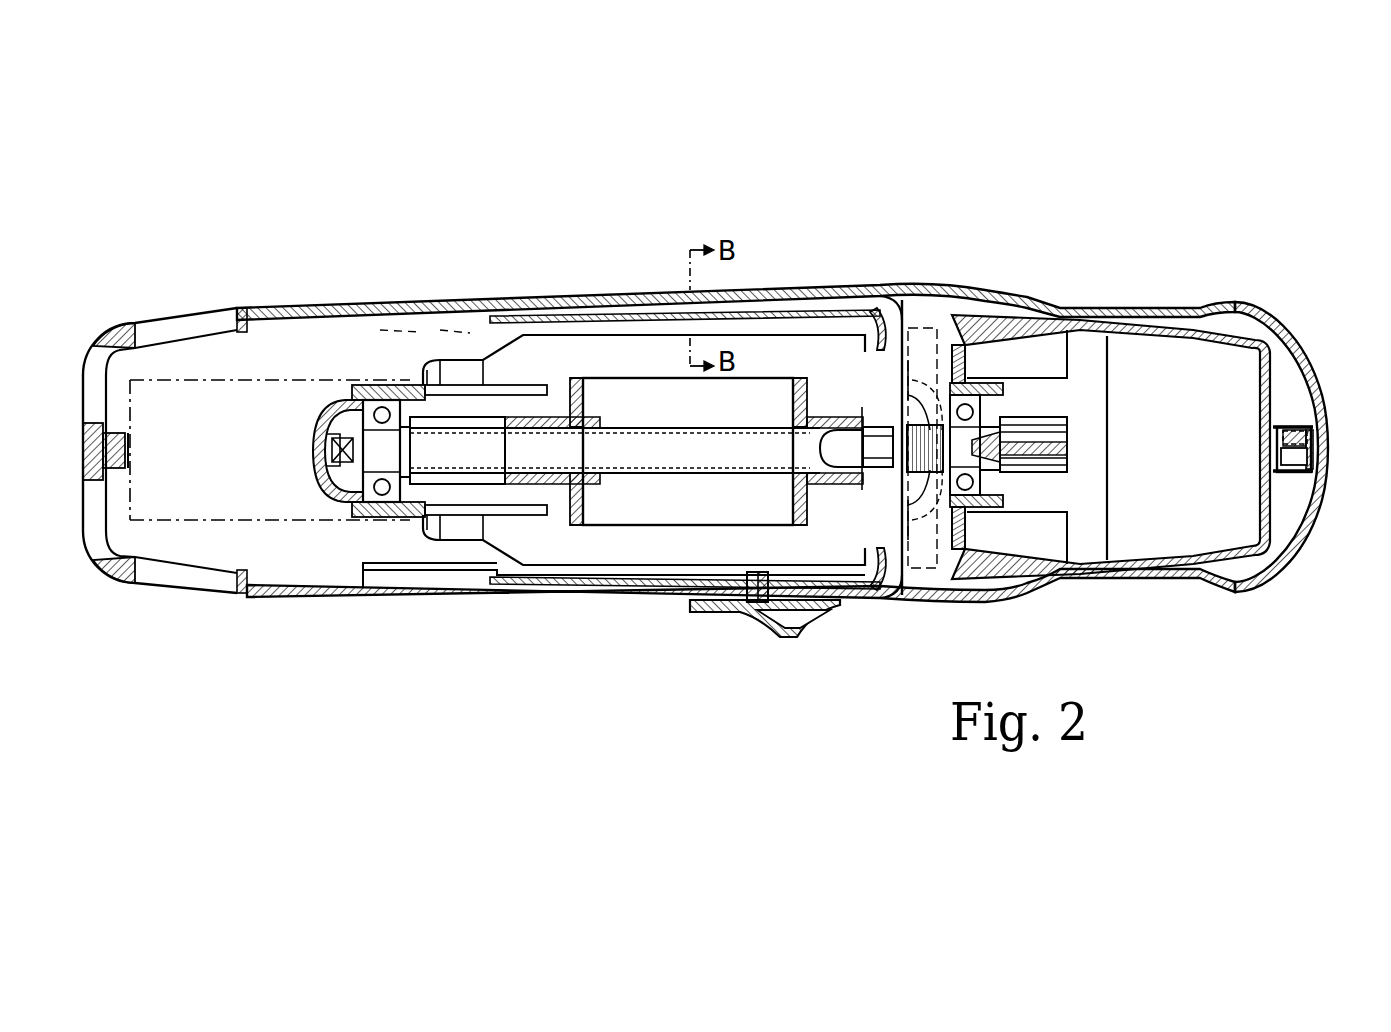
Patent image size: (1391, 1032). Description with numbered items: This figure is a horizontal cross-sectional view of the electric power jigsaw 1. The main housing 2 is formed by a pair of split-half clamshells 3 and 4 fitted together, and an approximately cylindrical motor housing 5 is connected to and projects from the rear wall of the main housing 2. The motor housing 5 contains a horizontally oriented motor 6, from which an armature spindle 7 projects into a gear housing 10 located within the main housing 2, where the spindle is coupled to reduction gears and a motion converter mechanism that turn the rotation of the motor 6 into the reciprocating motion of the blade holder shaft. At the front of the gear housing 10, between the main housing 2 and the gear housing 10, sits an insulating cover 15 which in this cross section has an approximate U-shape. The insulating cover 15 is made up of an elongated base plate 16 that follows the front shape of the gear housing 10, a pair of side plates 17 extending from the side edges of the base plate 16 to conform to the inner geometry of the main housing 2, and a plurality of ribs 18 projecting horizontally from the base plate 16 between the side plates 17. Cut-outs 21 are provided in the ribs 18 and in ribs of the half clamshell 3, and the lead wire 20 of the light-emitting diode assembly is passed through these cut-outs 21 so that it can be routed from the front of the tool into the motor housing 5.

The jigsaw 1 is at (1026, 234).
The main housing 2 is at (960, 287).
The split-half clamshell 3 is at (1226, 300).
The split-half clamshell 4 is at (1228, 582).
The motor housing 5 is at (590, 297).
The motor 6 is at (650, 512).
The armature spindle 7 is at (1102, 447).
The gear housing 10 is at (1068, 312).
The insulating cover 15 is at (1279, 423).
The base plate 16 is at (1268, 455).
The side plates 17 is at (1300, 420).
The ribs 18 is at (1300, 470).
The lead wire 20 is at (1316, 449).
The cut-outs 21 is at (1313, 429).